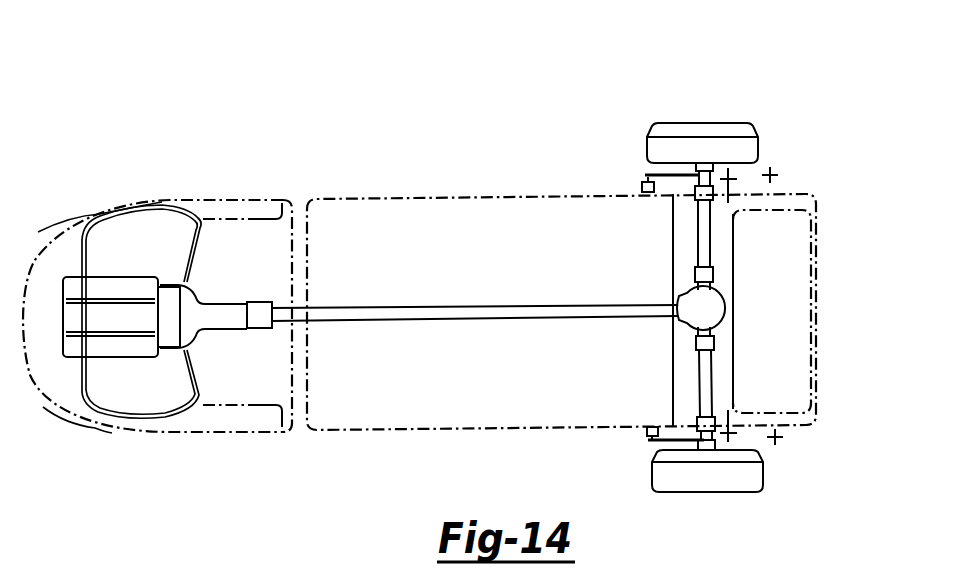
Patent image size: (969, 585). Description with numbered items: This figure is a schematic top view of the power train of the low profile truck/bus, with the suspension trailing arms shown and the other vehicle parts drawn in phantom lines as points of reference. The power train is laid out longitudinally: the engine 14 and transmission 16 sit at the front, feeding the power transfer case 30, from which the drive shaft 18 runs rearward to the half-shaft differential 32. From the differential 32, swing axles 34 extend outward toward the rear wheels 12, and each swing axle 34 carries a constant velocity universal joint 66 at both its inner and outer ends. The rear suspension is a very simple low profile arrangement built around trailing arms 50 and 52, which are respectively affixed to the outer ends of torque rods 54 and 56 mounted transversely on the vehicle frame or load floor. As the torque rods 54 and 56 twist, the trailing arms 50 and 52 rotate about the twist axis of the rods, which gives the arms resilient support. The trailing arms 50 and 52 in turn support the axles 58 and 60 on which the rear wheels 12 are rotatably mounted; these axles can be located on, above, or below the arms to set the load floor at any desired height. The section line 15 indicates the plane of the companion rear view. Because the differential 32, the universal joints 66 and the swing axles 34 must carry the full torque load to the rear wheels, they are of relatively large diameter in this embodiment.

The rear wheel 12 is at (703, 123).
The engine 14 is at (72, 289).
The section line 15- 15 is at (770, 105).
The transmission 16 is at (195, 305).
The drive shaft 18 is at (340, 314).
The power transfer case 30 is at (262, 305).
The half-shaft differential 32 is at (713, 307).
The swing axle 34 is at (703, 236).
The trailing arm 50 is at (654, 455).
The trailing arm 52 is at (648, 174).
The torque rod 54 is at (649, 442).
The torque rod 56 is at (644, 182).
The axle 58 is at (717, 441).
The axle 60 is at (716, 172).
The constant velocity universal joint 66 is at (704, 201).